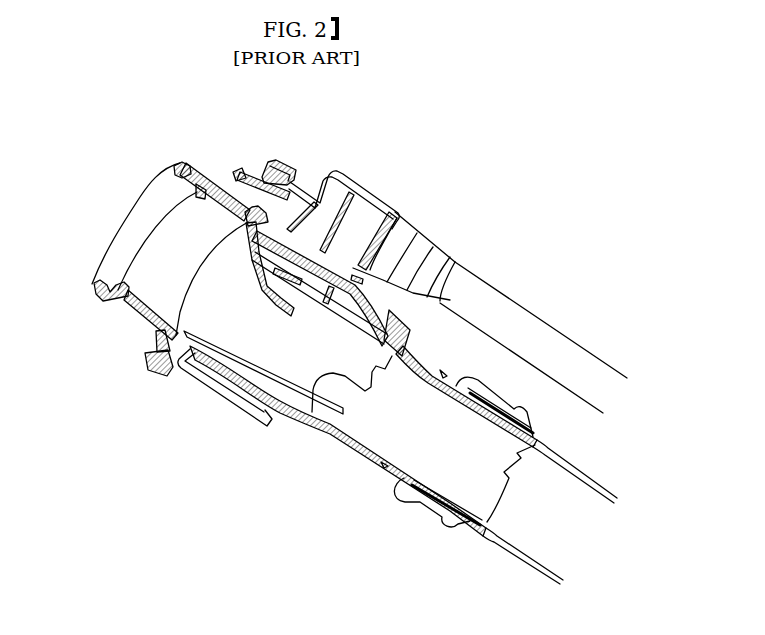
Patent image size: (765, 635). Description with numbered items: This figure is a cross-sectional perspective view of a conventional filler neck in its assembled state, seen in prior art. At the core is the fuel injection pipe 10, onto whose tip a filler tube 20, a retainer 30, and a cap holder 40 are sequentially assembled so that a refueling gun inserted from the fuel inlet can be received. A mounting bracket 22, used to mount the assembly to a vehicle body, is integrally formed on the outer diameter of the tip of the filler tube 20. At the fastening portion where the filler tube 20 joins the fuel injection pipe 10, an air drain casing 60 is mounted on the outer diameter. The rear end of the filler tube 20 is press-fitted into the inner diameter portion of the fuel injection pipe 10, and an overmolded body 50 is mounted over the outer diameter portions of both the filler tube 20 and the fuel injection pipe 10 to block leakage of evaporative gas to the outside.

The fuel injection pipe 10 is at (530, 528).
The filler tube 20 is at (397, 313).
The mounting bracket 22 is at (288, 170).
The retainer 30 is at (300, 388).
The cap holder 40 is at (122, 295).
The overmolded body 50 is at (422, 504).
The air drain casing 60 is at (357, 190).